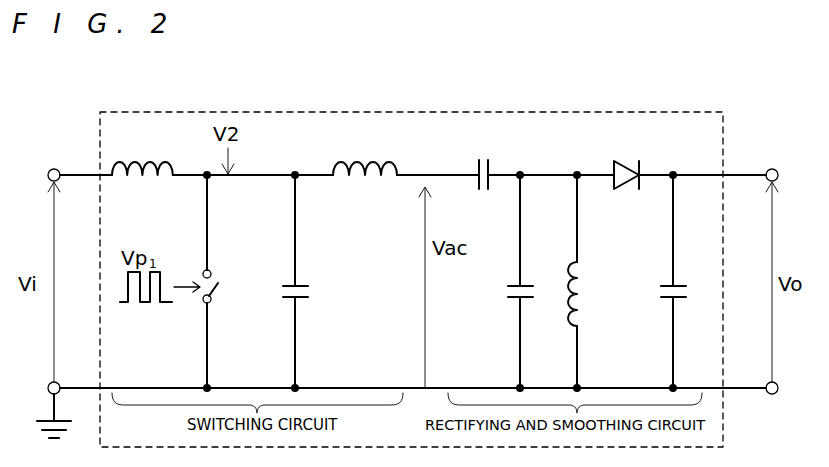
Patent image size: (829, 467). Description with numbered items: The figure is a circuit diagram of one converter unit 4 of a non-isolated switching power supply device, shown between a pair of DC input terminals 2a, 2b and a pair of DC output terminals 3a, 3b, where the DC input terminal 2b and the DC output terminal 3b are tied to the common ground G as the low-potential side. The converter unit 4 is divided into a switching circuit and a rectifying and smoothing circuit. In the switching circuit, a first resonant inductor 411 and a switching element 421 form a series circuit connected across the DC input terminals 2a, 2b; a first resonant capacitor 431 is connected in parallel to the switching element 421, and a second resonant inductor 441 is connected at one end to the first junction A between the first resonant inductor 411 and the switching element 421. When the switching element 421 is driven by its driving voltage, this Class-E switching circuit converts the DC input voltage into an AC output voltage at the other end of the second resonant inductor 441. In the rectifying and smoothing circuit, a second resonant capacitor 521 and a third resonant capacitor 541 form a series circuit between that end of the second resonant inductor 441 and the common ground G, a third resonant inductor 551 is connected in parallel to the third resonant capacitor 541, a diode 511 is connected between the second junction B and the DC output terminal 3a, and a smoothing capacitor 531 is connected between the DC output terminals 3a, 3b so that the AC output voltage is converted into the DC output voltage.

The converter unit 4 is at (403, 97).
The DC input terminal 2a is at (54, 168).
The DC input terminal 2b is at (52, 382).
The DC output terminal 3a is at (772, 168).
The DC output terminal 3b is at (772, 395).
The first resonant inductor 411 is at (137, 162).
The switching element 421 is at (218, 284).
The first resonant capacitor 431 is at (298, 284).
The second resonant inductor 441 is at (360, 163).
The diode 511 is at (622, 161).
The second resonant capacitor 521 is at (483, 160).
The smoothing capacitor 531 is at (677, 284).
The third resonant capacitor 541 is at (524, 284).
The third resonant inductor 551 is at (580, 262).
The first junction A is at (205, 180).
The second junction B is at (518, 180).
The common ground G is at (62, 420).